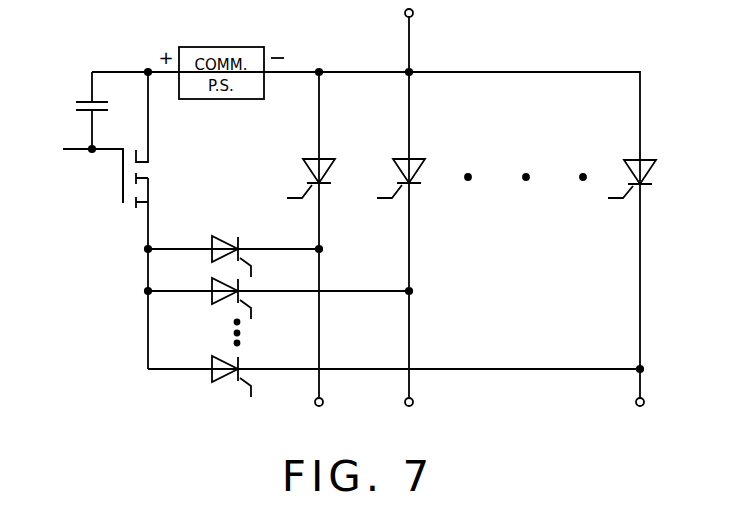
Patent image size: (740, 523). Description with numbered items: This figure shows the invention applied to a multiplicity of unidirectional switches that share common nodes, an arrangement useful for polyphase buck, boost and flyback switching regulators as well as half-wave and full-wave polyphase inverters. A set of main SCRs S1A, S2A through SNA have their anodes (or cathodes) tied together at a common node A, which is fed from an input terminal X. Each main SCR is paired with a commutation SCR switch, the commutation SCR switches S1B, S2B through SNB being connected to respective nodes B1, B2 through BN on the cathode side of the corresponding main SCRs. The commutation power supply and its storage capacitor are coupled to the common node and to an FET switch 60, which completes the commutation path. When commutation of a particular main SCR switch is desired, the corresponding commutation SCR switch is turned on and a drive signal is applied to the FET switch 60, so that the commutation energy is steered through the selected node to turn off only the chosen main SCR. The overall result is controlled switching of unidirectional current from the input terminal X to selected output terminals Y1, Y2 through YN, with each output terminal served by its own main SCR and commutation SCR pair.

The FET switch 60 is at (123, 189).
The input terminal X is at (414, 13).
The node A is at (411, 70).
The main SCR switch S1A is at (298, 171).
The main SCR switch S2A is at (390, 171).
The main SCR switch SNA is at (621, 171).
The commutation SCR switch S1B is at (213, 248).
The commutation SCR switch S2B is at (213, 290).
The commutation SCR switch SNB is at (213, 370).
The node B1 is at (322, 247).
The node B2 is at (412, 290).
The node BN is at (643, 367).
The output terminal Y1 is at (319, 413).
The output terminal Y2 is at (409, 413).
The output terminal YN is at (639, 413).